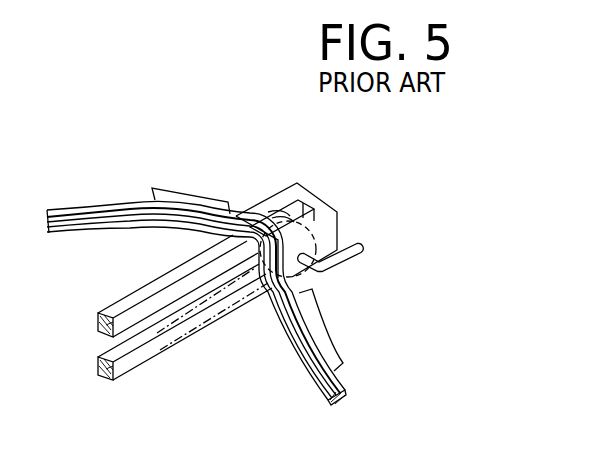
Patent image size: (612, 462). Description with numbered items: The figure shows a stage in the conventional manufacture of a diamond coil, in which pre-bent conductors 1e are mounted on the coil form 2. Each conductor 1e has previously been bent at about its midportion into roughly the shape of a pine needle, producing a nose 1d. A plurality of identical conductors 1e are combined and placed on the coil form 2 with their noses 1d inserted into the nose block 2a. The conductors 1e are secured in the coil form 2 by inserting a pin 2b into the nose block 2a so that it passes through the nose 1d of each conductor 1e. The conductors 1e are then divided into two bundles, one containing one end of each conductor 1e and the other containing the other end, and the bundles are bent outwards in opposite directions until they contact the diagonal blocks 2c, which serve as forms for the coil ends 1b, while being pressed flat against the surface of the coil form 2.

The coil ends 1b is at (220, 212).
The nose 1d is at (272, 210).
The conductor 1e is at (93, 207).
The coil form 2 is at (213, 377).
The nose block 2a is at (315, 203).
The pin 2b is at (363, 247).
The diagonal blocks 2c is at (173, 190).